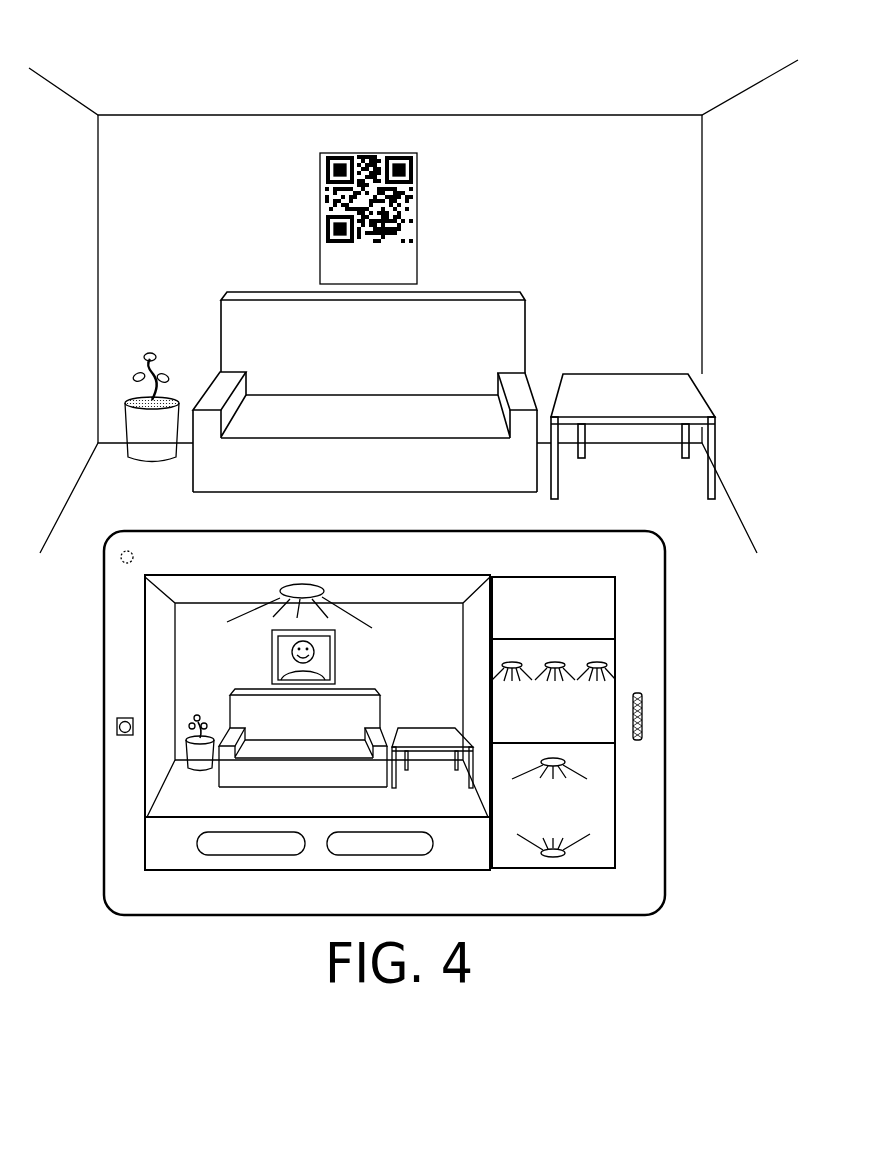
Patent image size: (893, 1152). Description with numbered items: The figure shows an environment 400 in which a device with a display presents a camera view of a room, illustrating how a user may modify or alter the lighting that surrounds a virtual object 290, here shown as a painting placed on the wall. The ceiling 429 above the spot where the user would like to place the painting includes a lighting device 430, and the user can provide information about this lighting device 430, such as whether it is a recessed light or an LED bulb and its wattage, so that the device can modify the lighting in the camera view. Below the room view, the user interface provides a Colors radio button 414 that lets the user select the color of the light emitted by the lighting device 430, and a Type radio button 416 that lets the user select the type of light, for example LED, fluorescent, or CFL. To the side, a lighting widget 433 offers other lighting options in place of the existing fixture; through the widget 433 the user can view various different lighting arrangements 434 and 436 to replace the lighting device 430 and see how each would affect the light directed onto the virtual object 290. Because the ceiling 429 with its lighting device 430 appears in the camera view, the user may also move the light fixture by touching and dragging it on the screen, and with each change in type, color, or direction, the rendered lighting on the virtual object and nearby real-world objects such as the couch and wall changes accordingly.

The environment 400 is at (88, 79).
The ceiling 429 is at (421, 588).
The lighting device 430 is at (302, 586).
The virtual object 290 is at (272, 660).
The lighting widget 433 is at (563, 574).
The lighting arrangement 434 is at (617, 675).
The lighting arrangement 436 is at (617, 799).
The Colors radio button 414 is at (250, 858).
The Type radio button 416 is at (380, 858).